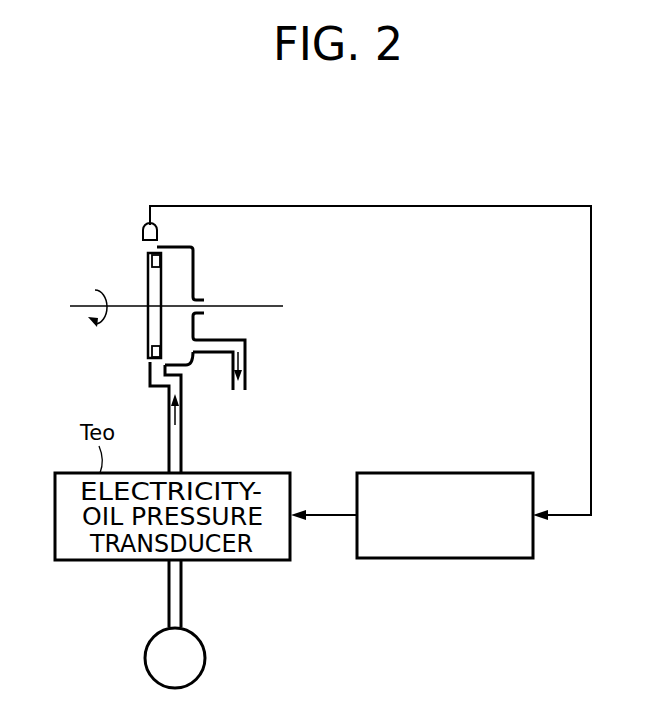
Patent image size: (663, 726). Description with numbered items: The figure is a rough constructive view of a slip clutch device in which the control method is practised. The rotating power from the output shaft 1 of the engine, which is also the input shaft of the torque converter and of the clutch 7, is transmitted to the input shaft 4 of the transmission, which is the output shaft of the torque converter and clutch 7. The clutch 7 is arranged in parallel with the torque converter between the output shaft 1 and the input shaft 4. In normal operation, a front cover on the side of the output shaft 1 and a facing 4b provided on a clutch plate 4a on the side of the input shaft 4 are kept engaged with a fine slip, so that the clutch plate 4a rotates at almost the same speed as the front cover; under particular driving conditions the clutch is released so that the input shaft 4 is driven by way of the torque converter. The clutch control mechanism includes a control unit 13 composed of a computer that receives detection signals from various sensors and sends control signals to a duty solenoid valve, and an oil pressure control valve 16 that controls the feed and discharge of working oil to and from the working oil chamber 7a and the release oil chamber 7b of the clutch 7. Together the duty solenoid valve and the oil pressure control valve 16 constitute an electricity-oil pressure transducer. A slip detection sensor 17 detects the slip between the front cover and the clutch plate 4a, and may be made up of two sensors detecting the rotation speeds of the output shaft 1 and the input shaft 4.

The output shaft 1 is at (77, 305).
The input shaft 4 is at (263, 308).
The clutch plate 4a is at (168, 276).
The facing 4b is at (152, 261).
The clutch 7 is at (156, 325).
The working oil chamber 7a is at (176, 347).
The release oil chamber 7b is at (152, 341).
The control unit 13 is at (445, 473).
The oil pressure control valve 16 is at (205, 653).
The slip detection sensor 17 is at (145, 232).